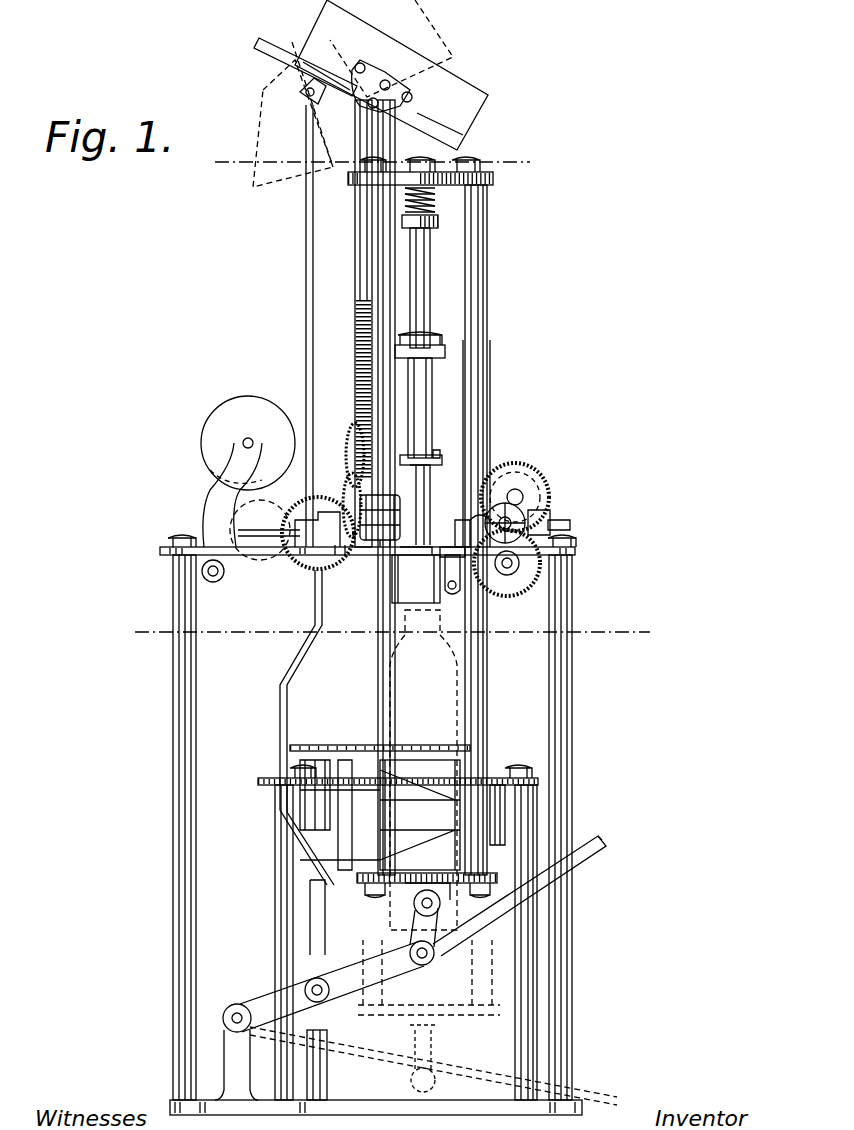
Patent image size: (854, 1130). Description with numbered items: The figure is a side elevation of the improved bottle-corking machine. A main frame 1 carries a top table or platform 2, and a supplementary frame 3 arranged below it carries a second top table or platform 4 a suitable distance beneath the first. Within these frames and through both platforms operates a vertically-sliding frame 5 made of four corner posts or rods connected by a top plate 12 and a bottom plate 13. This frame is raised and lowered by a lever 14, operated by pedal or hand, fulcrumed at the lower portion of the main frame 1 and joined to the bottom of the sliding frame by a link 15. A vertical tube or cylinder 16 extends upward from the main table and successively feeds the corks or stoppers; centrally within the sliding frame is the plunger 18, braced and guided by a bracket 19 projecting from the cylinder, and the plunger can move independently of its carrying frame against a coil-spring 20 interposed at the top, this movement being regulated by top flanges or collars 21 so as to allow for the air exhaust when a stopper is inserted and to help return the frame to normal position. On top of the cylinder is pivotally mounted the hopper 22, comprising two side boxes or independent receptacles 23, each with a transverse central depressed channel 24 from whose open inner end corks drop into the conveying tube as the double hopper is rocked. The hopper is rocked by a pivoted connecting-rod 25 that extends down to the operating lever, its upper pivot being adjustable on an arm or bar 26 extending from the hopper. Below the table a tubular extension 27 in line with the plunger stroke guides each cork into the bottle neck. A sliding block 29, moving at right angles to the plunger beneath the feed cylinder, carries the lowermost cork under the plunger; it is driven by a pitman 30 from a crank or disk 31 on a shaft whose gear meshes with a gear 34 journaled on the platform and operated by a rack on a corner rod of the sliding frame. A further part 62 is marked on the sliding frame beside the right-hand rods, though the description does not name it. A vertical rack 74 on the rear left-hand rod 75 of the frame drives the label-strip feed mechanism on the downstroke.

The main frame 1 is at (375, 825).
The top table or platform 2 is at (325, 565).
The supplementary frame 3 is at (275, 878).
The top table or platform 4 is at (495, 778).
The vertically-sliding frame 5 is at (480, 378).
The top plate 12 is at (452, 180).
The bottom plate 13 is at (400, 884).
The lever 14 is at (596, 858).
The link 15 is at (438, 915).
The vertical tube or cylinder 16 is at (378, 252).
The plunger 18 is at (418, 424).
The bracket 19 is at (402, 390).
The coil-spring 20 is at (434, 199).
The top flanges or collars 21 is at (434, 345).
The hopper 22 is at (399, 75).
The side boxes or independent receptacles 23 is at (382, 67).
The transverse central depressed channel 24 is at (440, 126).
The pivoted connecting-rod 25 is at (293, 835).
The arm or bar 26 is at (262, 62).
The tubular extension 27 is at (401, 513).
The sliding block 29 is at (318, 533).
The pitman 30 is at (265, 530).
The crank or disk 31 is at (248, 471).
The gear 34 is at (318, 521).
The shaft 62 is at (480, 442).
The vertical rack 74 is at (360, 382).
The rear left-hand rod 75 is at (366, 285).